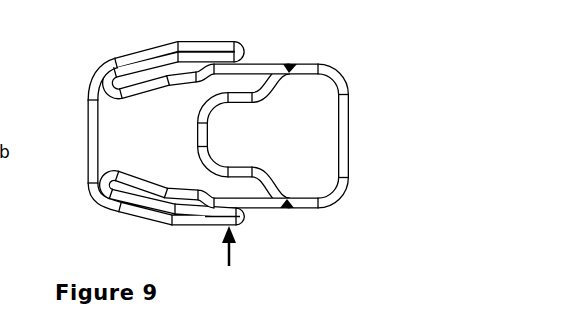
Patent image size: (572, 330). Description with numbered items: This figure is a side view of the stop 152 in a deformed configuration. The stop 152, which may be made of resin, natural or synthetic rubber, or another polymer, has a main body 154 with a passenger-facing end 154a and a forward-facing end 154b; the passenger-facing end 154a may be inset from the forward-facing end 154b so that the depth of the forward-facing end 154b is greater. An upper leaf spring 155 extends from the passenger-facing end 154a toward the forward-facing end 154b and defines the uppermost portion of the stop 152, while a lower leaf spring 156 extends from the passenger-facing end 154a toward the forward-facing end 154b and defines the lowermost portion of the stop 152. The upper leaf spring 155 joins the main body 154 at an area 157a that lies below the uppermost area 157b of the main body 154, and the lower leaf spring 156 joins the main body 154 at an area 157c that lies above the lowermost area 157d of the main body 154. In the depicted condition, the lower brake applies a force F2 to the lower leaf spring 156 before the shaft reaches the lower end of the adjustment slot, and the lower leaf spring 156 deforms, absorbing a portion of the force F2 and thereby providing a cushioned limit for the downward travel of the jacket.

The stop 152 is at (361, 46).
The main body 154 is at (380, 77).
The passenger-facing end 154a is at (80, 126).
The forward-facing end 154b is at (356, 134).
The upper leaf spring 155 is at (225, 40).
The lower leaf spring 156 is at (207, 218).
The area 157a is at (104, 92).
The uppermost area 157b is at (285, 63).
The area 157c is at (100, 176).
The lowermost area 157d is at (279, 208).
The force F2 is at (227, 251).